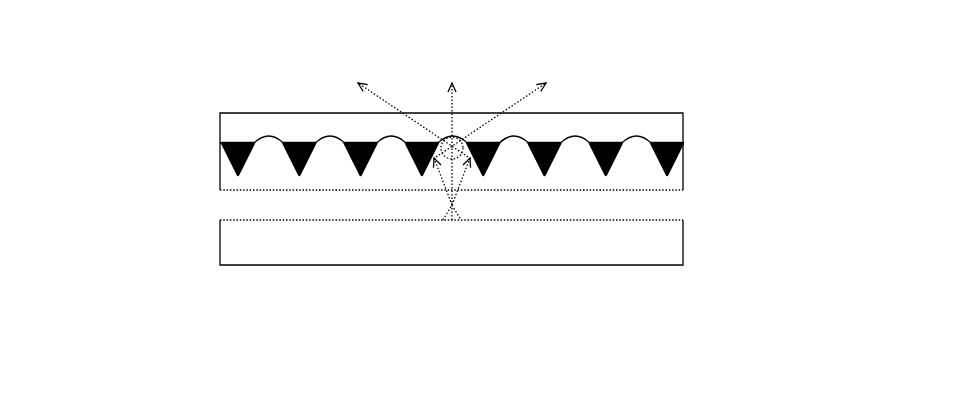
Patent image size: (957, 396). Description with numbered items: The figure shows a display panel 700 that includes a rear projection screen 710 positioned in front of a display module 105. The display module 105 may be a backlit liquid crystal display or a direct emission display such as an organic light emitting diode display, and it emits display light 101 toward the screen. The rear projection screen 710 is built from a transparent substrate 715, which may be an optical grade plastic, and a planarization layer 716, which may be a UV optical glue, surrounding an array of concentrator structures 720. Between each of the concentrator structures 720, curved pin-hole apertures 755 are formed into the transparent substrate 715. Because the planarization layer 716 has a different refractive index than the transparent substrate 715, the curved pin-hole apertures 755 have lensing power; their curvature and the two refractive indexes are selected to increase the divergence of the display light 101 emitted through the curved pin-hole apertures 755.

The display panel 700 is at (668, 44).
The rear projection screen 710 is at (698, 190).
The transparent substrate 715 is at (592, 136).
The planarization layer 716 is at (562, 180).
The concentrator structures 720 is at (210, 152).
The curved pin-hole apertures 755 is at (329, 137).
The display light 101 is at (452, 98).
The display module 105 is at (451, 242).